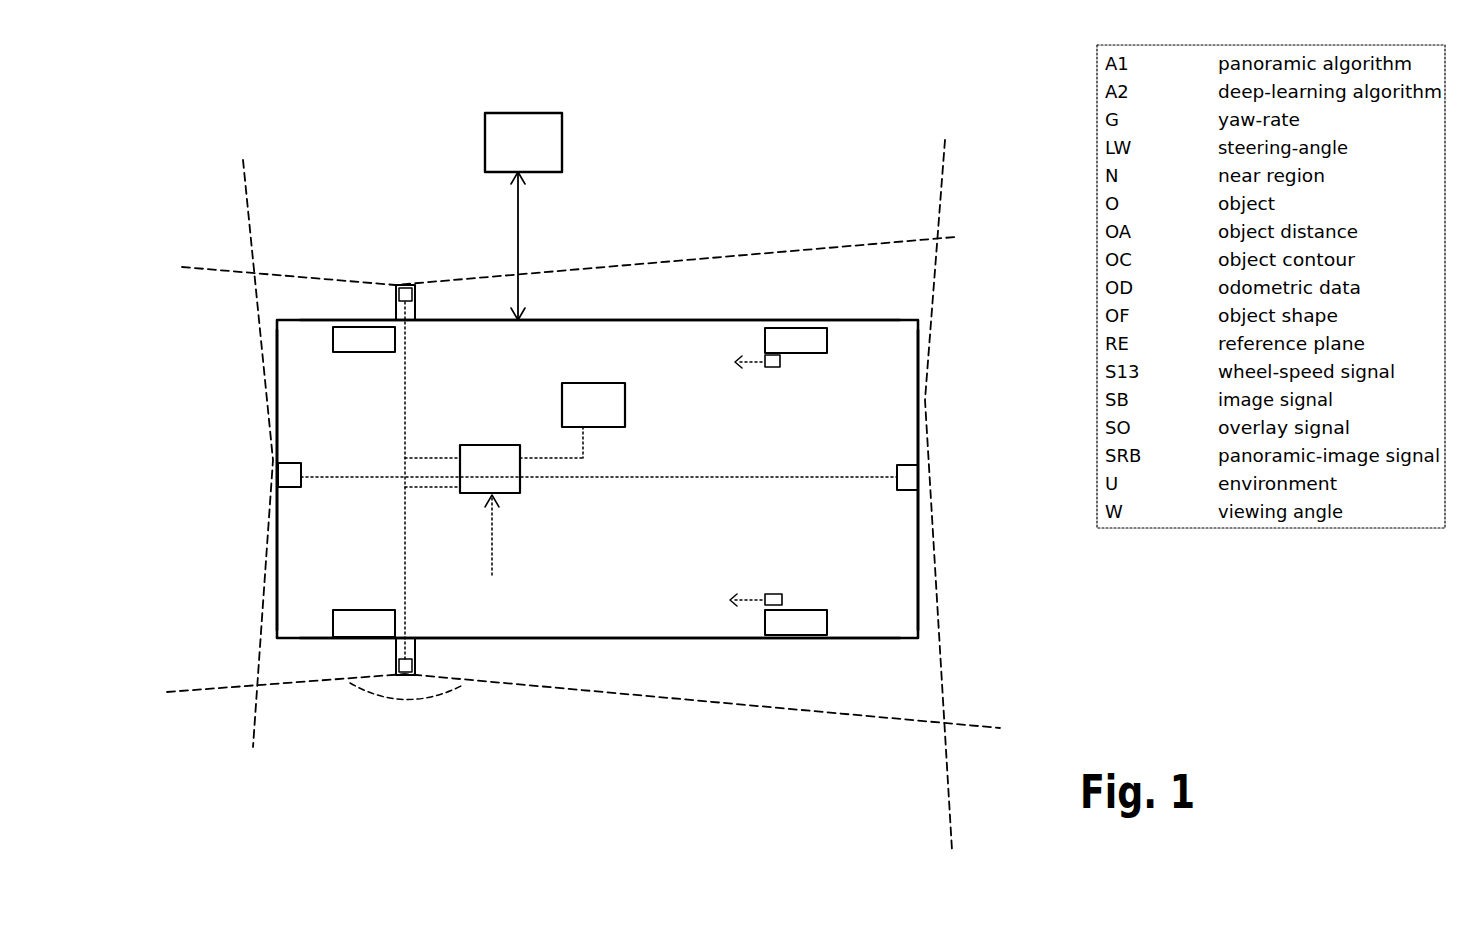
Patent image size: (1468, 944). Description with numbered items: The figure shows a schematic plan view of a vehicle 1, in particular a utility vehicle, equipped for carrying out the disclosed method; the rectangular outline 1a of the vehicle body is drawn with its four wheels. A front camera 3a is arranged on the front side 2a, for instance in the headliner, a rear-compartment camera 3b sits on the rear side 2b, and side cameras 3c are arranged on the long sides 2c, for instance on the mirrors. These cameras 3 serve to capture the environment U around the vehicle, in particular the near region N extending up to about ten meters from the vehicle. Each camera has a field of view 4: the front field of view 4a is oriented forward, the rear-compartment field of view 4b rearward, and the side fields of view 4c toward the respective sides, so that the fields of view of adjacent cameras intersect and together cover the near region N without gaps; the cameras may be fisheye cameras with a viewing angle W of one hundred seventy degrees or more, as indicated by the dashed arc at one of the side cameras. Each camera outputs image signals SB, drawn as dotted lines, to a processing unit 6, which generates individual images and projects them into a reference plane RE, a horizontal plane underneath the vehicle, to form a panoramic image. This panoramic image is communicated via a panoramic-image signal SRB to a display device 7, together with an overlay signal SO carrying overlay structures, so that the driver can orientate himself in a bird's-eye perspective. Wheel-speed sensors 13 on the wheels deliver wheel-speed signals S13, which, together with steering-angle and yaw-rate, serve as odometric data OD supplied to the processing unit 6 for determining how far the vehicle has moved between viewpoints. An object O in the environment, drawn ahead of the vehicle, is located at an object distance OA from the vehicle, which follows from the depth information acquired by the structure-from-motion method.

The vehicle 1 is at (649, 452).
The vehicle outline 1a is at (895, 320).
The front side 2a is at (275, 620).
The rear side 2b is at (934, 623).
The long sides 2c is at (658, 309).
The cameras 3 is at (560, 476).
The front camera 3a is at (290, 478).
The rear-compartment camera 3b is at (913, 478).
The side cameras 3c is at (408, 287).
The field of view 4 is at (598, 476).
The front field of view 4a is at (253, 308).
The rear-compartment field of view 4b is at (943, 682).
The side field of view 4c is at (900, 240).
The processing unit 6 is at (500, 478).
The display device 7 is at (625, 385).
The wheel-speed sensors 13 is at (780, 361).
The object O is at (565, 148).
The object distance OA is at (520, 258).
The image signals SB is at (407, 413).
The overlay signal SO is at (562, 452).
The panoramic-image signal SRB is at (580, 450).
The wheel-speed signals S13 is at (717, 424).
The odometric data OD is at (500, 533).
The viewing angle W is at (403, 698).
The environment U is at (142, 142).
The near region N is at (842, 223).
The reference plane RE is at (193, 618).